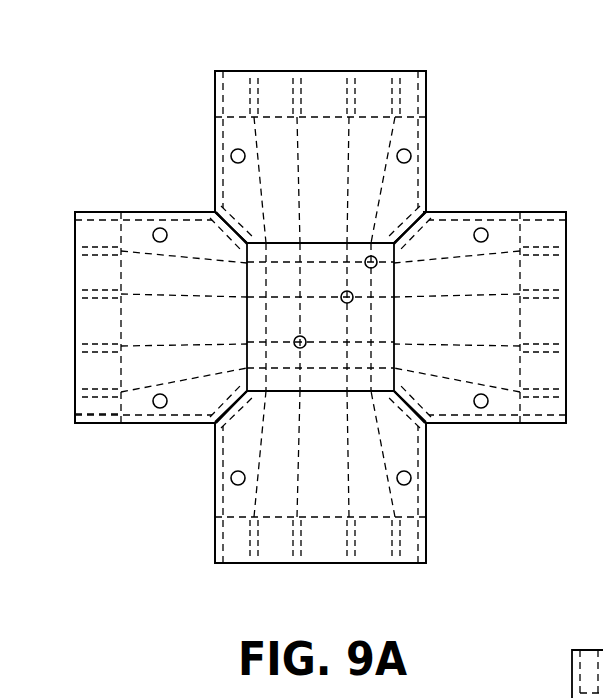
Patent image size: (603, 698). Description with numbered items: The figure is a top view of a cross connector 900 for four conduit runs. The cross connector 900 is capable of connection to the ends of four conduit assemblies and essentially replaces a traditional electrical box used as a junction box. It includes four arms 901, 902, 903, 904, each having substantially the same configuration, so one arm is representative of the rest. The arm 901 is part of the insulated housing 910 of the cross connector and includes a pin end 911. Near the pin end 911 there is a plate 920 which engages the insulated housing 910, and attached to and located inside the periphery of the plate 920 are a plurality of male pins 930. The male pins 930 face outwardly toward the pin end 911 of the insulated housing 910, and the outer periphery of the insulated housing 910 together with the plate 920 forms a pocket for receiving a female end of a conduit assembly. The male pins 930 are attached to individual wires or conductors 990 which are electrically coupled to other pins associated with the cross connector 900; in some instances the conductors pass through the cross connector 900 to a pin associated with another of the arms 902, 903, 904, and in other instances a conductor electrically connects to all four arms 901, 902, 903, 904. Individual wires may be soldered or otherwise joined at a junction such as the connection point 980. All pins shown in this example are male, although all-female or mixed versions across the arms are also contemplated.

The cross connector 900 is at (505, 128).
The arm 901 is at (158, 211).
The arm 902 is at (214, 107).
The arm 903 is at (452, 423).
The arm 904 is at (427, 525).
The insulated housing 910 is at (145, 423).
The pin end 911 is at (75, 369).
The plate 920 is at (122, 404).
The male pins 930 is at (394, 72).
The connection point 980 is at (377, 208).
The conductors 990 is at (193, 378).